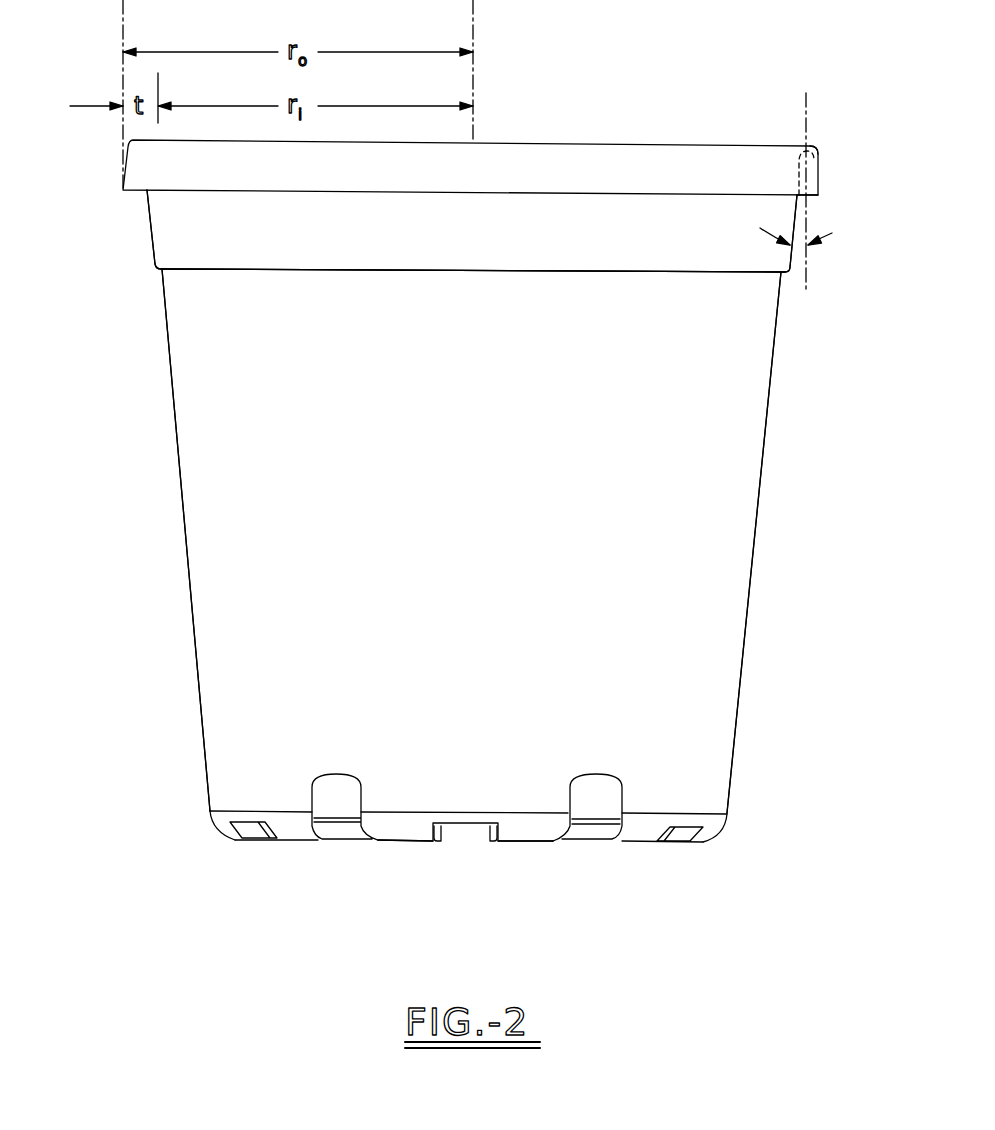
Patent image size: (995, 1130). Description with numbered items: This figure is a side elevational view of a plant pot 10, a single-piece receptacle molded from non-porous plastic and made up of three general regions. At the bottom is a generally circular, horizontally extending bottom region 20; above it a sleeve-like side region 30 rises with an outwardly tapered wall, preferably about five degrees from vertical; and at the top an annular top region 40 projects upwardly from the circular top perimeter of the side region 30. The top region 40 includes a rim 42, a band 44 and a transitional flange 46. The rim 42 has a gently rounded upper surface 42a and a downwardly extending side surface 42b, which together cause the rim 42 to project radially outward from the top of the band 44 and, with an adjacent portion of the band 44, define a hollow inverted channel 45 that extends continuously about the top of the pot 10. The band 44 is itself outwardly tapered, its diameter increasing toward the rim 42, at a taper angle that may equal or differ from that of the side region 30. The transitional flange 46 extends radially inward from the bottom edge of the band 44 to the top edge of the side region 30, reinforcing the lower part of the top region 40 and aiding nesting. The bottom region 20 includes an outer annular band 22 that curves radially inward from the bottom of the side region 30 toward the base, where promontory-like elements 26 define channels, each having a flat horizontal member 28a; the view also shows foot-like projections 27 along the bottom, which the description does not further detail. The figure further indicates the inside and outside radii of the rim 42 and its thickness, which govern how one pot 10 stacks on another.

The plant pot 10 is at (187, 678).
The bottom region 20 is at (418, 848).
The outer annular band 22 is at (717, 837).
The promontory-like elements 26 is at (405, 845).
The feet projections 27 is at (327, 795).
The flat horizontal member 28a is at (252, 838).
The side region 30 is at (207, 456).
The top region 40 is at (152, 238).
The rim 42 is at (143, 172).
The upper surface 42a is at (812, 148).
The side surface 42b is at (822, 188).
The band 44 is at (173, 236).
The hollow inverted channel 45 is at (822, 176).
The transitional flange 46 is at (218, 268).